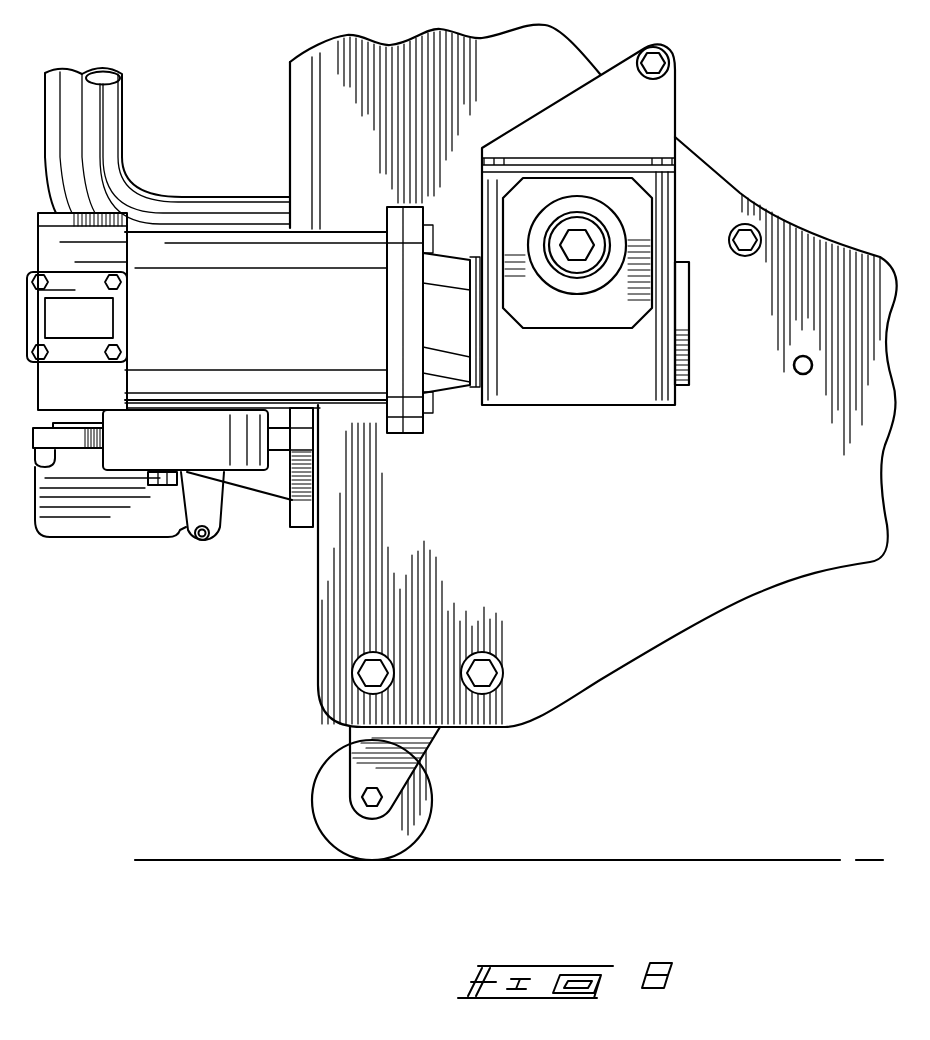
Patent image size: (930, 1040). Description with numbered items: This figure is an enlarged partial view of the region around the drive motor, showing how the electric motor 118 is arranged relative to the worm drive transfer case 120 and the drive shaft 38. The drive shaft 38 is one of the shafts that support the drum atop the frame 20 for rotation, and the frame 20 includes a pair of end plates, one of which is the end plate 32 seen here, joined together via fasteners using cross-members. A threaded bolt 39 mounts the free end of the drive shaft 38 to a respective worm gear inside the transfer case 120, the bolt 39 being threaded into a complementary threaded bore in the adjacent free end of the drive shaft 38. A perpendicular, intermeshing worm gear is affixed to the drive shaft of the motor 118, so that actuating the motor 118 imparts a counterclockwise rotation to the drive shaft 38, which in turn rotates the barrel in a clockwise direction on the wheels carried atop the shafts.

The frame 20 is at (317, 600).
The end plate 32 is at (720, 547).
The drive shaft 38 is at (553, 278).
The threaded bolt 39 is at (583, 277).
The electric motor 118 is at (276, 341).
The worm drive transfer case 120 is at (676, 217).